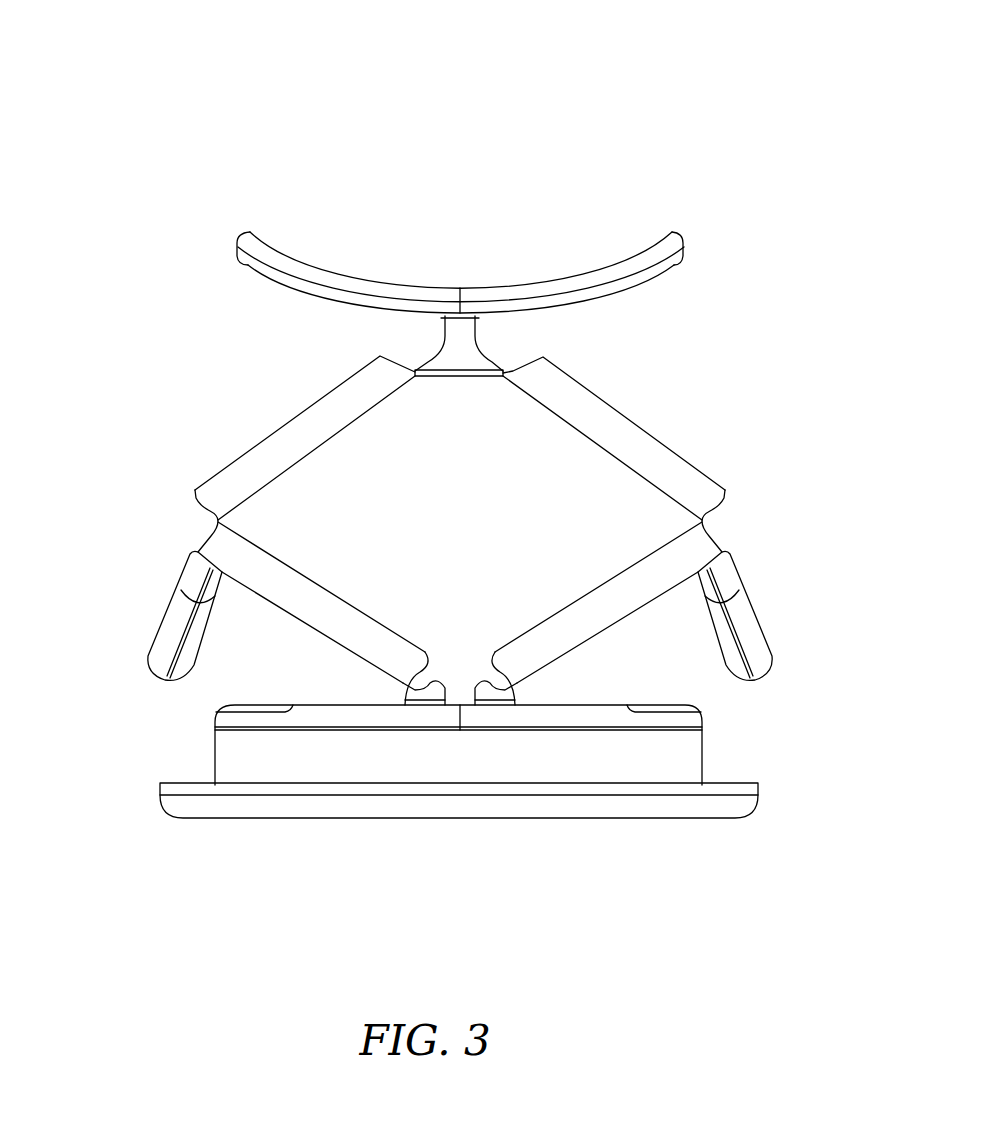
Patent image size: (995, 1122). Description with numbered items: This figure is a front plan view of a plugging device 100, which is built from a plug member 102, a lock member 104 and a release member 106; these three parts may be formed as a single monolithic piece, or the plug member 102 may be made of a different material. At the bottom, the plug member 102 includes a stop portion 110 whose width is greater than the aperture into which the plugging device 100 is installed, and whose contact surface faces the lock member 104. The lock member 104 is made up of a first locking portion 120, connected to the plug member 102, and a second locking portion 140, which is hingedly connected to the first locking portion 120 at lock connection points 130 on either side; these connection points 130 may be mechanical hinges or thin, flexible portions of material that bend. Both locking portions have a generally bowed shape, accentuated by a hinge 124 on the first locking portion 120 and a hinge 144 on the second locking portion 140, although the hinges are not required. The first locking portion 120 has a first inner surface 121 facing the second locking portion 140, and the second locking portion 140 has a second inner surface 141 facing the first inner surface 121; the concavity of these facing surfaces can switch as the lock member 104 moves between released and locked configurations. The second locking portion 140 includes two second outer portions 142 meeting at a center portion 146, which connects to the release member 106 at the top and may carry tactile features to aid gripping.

The plugging device 100 is at (117, 143).
The plug member 102 is at (755, 762).
The lock member 104 is at (172, 523).
The release member 106 is at (650, 237).
The stop portion 110 is at (162, 793).
The first locking portion 120 is at (522, 597).
The first inner surface 121 is at (605, 580).
The hinge 124 is at (405, 683).
The lock connection point 130 is at (220, 520).
The second locking portion 140 is at (382, 440).
The second inner surface 141 is at (535, 405).
The second outer portion 142 is at (628, 440).
The hinge 144 is at (417, 372).
The center portion 146 is at (466, 357).